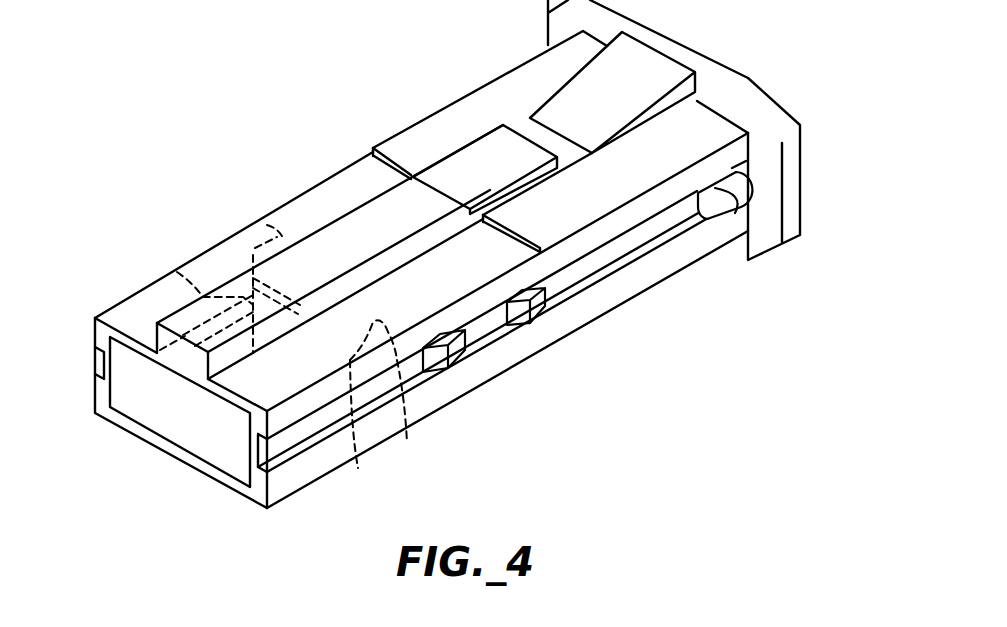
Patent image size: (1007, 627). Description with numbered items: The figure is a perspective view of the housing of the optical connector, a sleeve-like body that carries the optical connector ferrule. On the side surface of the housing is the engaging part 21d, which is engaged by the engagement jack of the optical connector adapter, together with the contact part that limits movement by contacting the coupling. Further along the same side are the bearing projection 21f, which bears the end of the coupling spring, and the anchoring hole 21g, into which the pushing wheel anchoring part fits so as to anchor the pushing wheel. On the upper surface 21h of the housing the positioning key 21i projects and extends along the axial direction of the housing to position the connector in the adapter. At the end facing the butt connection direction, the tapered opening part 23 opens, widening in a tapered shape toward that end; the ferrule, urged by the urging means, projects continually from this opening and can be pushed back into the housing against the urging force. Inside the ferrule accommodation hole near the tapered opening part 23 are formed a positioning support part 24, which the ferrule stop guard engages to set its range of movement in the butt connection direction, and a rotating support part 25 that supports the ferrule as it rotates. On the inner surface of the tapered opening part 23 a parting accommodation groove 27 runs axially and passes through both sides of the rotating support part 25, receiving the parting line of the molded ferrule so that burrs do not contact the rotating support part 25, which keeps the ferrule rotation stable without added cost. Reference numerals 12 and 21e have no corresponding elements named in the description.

The connector housing 12 is at (426, 108).
The engaging part 21d is at (449, 357).
The second projection 21e is at (533, 323).
The bearing projection 21f is at (727, 214).
The anchoring hole 21g is at (733, 170).
The upper surface 21h is at (317, 210).
The positioning key 21i is at (281, 238).
The tapered opening part 23 is at (188, 444).
The positioning support part 24 is at (242, 246).
The rotating support part 25 is at (178, 272).
The parting accommodation groove 27 is at (106, 376).